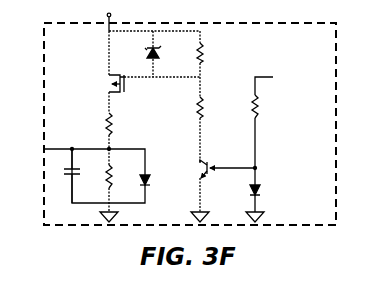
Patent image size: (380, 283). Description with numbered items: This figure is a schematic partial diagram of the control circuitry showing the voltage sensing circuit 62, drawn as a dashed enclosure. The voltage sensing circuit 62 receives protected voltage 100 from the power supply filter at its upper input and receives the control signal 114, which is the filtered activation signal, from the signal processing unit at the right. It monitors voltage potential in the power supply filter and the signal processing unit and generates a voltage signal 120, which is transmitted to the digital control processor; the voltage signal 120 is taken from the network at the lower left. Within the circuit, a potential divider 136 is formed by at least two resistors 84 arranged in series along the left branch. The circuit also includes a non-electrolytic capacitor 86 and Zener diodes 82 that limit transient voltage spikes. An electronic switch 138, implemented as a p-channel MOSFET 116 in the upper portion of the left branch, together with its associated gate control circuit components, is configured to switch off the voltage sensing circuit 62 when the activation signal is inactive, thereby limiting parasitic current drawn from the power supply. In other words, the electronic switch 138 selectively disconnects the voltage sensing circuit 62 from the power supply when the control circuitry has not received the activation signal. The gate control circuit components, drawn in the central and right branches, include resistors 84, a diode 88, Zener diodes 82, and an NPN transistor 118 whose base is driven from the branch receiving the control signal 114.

The voltage sensing circuit 62 is at (57, 22).
The protected voltage 100 is at (111, 15).
The electronic switch 138 is at (104, 64).
The potential divider 136 is at (92, 120).
The Zener diode 82 is at (161, 55).
The resistor 84 is at (112, 124).
The p-channel MOSFET 116 is at (120, 96).
The voltage signal 120 is at (53, 148).
The non-electrolytic capacitor 86 is at (76, 170).
The control signal 114 is at (265, 77).
The NPN transistor 118 is at (212, 163).
The diode 88 is at (261, 190).